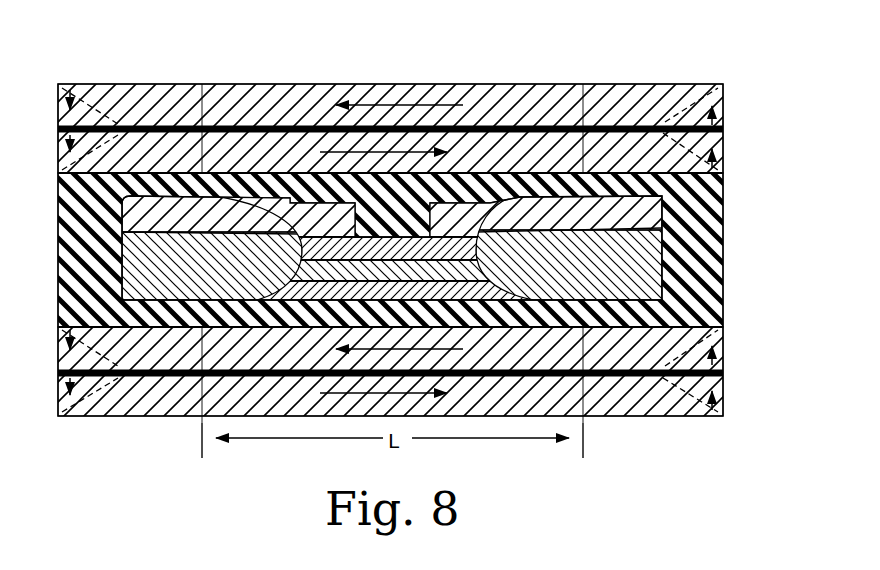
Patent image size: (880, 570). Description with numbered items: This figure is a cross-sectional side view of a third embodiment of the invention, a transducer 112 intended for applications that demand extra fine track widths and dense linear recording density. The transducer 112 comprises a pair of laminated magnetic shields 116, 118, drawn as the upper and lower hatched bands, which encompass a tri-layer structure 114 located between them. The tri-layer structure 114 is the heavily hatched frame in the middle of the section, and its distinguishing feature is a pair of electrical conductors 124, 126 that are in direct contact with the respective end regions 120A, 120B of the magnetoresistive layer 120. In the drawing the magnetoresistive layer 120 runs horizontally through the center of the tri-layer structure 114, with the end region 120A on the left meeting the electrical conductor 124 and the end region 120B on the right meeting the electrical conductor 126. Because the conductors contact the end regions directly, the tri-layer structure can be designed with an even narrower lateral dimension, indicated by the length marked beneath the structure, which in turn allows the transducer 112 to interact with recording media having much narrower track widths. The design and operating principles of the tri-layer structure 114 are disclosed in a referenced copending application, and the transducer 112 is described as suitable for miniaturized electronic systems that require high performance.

The transducer 112 is at (750, 146).
The tri-layer structure 114 is at (667, 268).
The laminated magnetic shield 116 is at (631, 430).
The laminated magnetic shield 118 is at (621, 72).
The magnetoresistive layer 120 is at (369, 173).
The end region of magnetoresistive layer 120A is at (302, 240).
The end region of magnetoresistive layer 120B is at (470, 235).
The electrical conductor 124 is at (122, 211).
The electrical conductor 126 is at (617, 214).